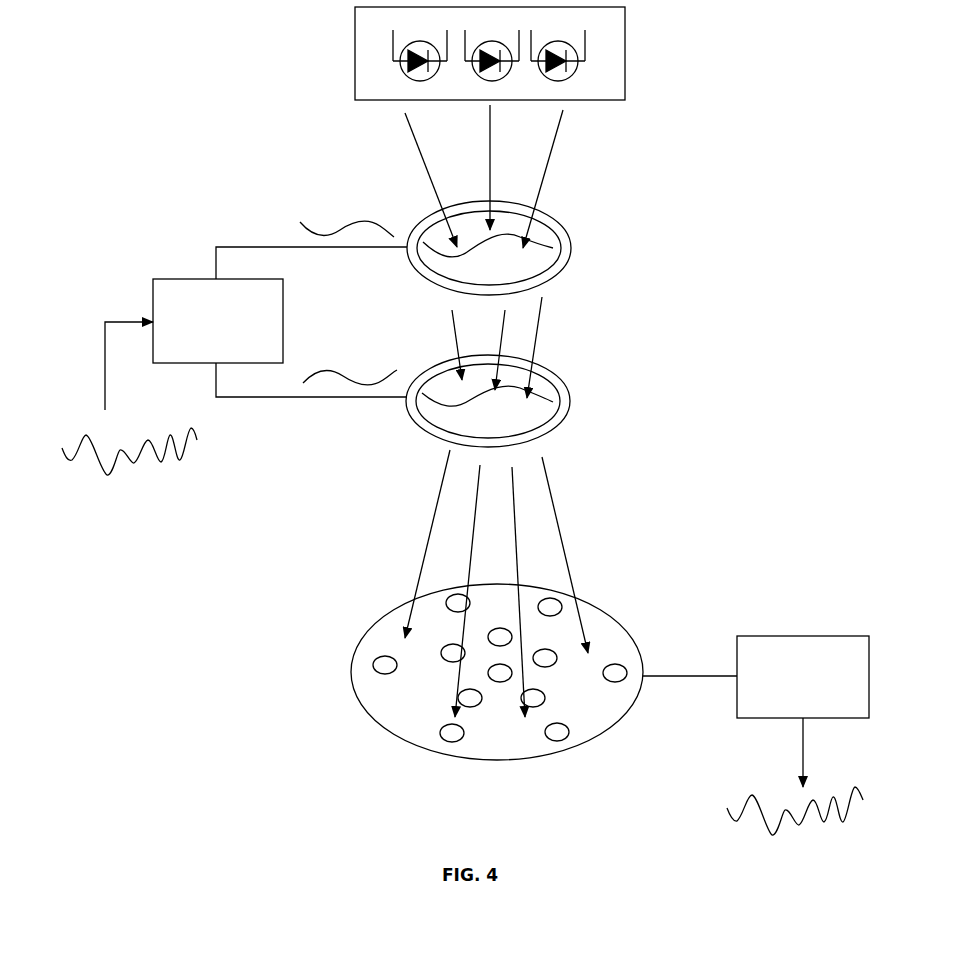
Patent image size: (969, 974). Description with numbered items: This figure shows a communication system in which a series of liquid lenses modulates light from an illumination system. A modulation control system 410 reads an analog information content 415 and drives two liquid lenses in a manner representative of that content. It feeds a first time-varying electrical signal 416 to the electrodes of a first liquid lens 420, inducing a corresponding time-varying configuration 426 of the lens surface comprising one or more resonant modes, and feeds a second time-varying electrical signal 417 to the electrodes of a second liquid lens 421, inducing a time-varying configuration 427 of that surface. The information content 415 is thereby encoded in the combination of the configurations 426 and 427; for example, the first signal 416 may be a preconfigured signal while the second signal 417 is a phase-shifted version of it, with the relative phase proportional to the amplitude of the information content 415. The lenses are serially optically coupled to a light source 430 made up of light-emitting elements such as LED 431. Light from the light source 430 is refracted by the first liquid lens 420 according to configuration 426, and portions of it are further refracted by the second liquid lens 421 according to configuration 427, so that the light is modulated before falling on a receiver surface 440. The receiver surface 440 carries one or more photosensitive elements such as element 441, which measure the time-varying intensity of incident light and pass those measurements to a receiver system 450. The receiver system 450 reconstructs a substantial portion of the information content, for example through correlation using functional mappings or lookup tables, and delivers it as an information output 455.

The modulation control system 410 is at (167, 273).
The analog information content 415 is at (158, 473).
The first time-varying electrical signal 416 is at (347, 213).
The second time-varying electrical signal 417 is at (350, 362).
The first liquid lens 420 is at (574, 243).
The second liquid lens 421 is at (573, 383).
The time-varying configuration of the first liquid lens surface 426 is at (488, 254).
The time-varying configuration of the second liquid lens surface 427 is at (487, 406).
The light source 430 is at (633, 38).
The LED 431 is at (385, 42).
The receiver surface 440 is at (610, 608).
The photosensitive element 441 is at (496, 668).
The receiver system 450 is at (785, 628).
The information output 455 is at (735, 790).